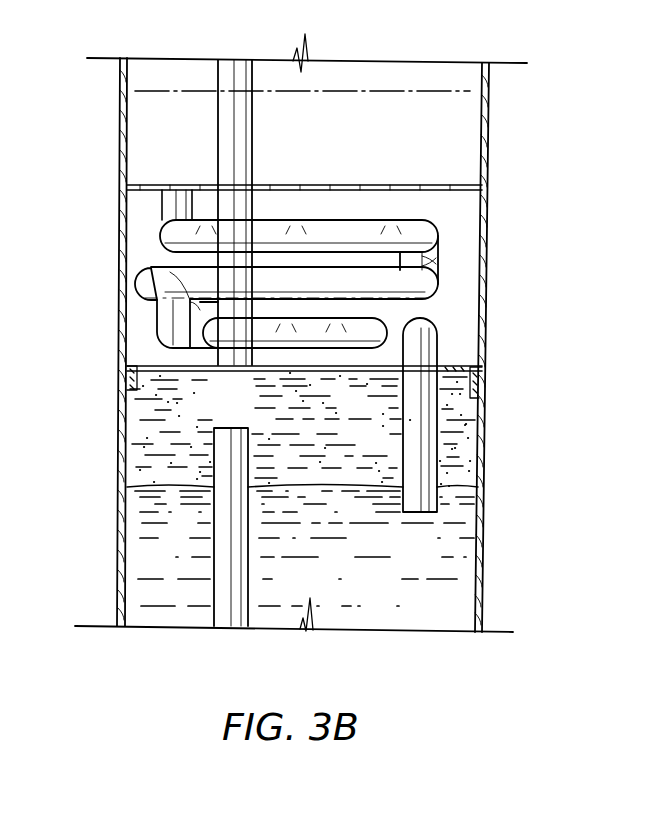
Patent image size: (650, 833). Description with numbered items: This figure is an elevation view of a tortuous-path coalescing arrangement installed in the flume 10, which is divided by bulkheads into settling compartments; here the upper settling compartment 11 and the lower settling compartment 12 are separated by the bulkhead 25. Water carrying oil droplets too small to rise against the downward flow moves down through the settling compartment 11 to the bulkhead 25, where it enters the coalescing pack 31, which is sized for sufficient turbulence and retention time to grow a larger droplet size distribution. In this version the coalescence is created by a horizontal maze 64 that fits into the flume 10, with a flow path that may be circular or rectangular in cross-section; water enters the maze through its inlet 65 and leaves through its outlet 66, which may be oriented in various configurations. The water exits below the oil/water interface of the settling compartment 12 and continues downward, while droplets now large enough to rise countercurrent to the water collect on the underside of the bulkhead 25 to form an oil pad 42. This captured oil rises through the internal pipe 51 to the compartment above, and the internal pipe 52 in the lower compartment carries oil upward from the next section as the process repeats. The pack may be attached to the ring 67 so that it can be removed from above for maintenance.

The flume 10 is at (122, 118).
The settling compartment 11 is at (470, 104).
The settling compartment 12 is at (135, 534).
The bulkhead 25 is at (410, 185).
The coalescing pack 31 is at (138, 318).
The oil pad 42 is at (135, 442).
The internal pipe 51 is at (254, 107).
The internal pipe 52 is at (250, 529).
The horizontal maze 64 is at (160, 233).
The inlet 65 is at (175, 184).
The outlet 66 is at (417, 515).
The ring 67 is at (135, 382).